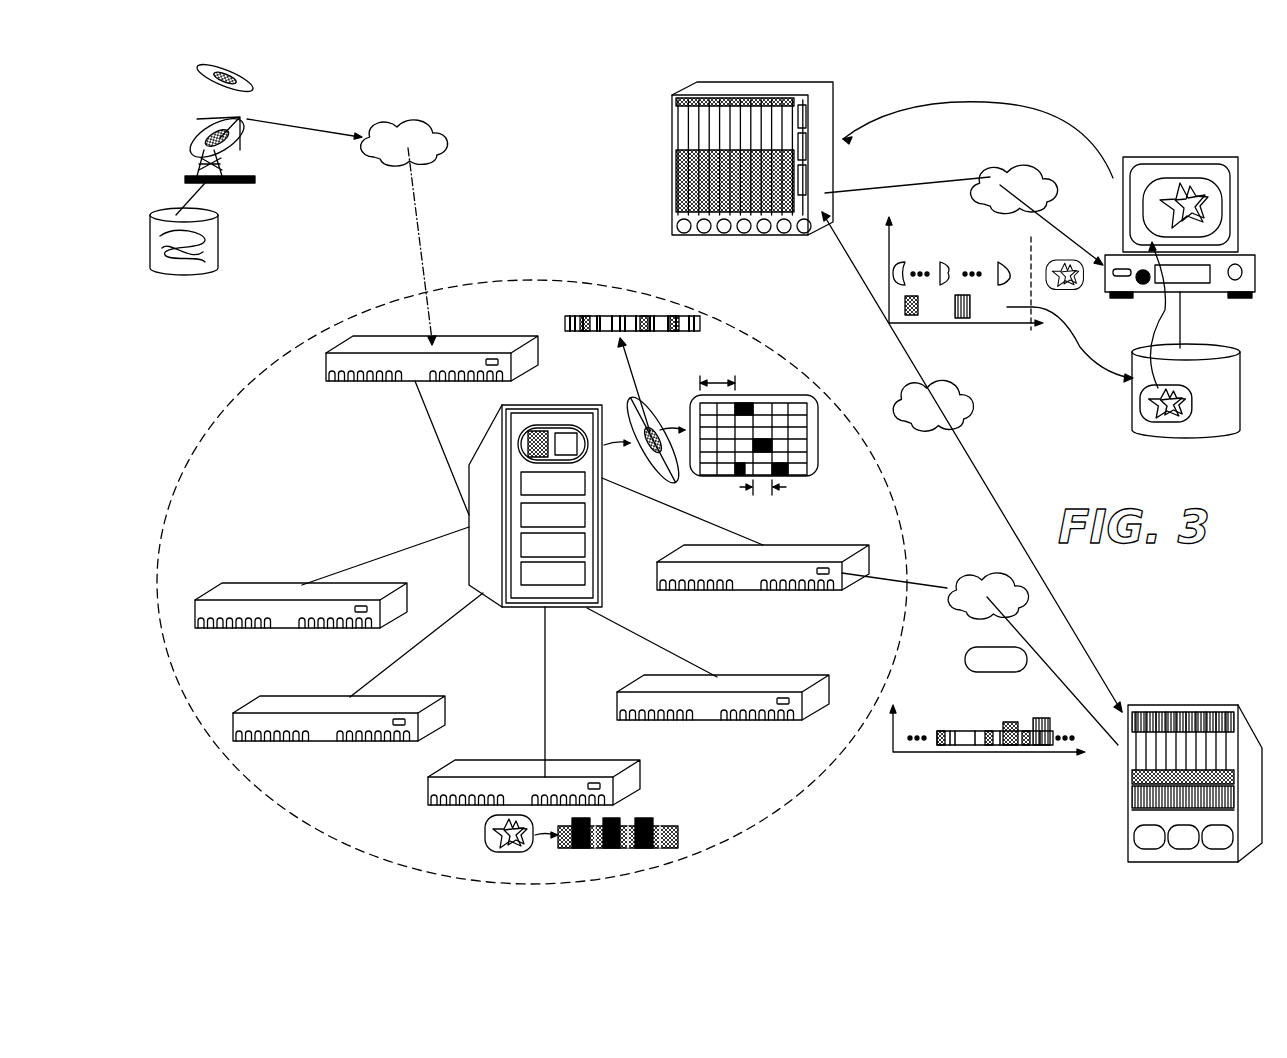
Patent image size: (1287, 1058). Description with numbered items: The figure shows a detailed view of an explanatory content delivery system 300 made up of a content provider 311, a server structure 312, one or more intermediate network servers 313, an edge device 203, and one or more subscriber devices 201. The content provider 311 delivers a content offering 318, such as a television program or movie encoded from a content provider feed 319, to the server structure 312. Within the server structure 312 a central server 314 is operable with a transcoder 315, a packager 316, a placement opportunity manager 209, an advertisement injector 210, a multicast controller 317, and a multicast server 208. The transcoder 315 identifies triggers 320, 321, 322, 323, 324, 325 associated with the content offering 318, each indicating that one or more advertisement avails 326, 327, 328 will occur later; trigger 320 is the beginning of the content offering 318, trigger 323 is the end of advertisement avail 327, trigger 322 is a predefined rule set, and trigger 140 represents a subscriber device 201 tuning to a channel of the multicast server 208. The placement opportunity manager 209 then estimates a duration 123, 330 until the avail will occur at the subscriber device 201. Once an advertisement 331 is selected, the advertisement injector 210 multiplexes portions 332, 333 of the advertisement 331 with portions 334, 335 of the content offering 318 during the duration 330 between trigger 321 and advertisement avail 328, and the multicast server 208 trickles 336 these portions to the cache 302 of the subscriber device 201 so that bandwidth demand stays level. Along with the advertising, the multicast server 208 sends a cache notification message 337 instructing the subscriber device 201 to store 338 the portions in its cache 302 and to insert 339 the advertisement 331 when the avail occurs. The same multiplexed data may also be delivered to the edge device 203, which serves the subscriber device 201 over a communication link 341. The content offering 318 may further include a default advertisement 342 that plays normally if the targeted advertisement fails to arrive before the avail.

The content delivery system 300 is at (220, 366).
The server structure 312 is at (262, 788).
The content offering 318 is at (232, 70).
The content provider 311 is at (254, 182).
The content provider feed 319 is at (303, 120).
The transcoder 315 is at (482, 345).
The packager 316 is at (273, 590).
The placement opportunity manager 209 is at (318, 705).
The advertisement injector 210 is at (527, 770).
The multicast controller 317 is at (770, 688).
The multicast server 208 is at (756, 583).
The central server 314 is at (606, 522).
The duration 123 is at (722, 378).
The trigger 320 is at (712, 378).
The trigger 321 is at (762, 478).
The trigger 322 is at (697, 404).
The trigger 324 is at (735, 463).
The advertisement avail 326 is at (744, 410).
The default advertisement 342 is at (780, 408).
The trigger 325 is at (736, 425).
The advertisement avail 327 is at (773, 443).
The trigger 323 is at (790, 463).
The advertisement avail 328 is at (784, 470).
The duration 330 is at (776, 488).
The edge device 203 is at (758, 228).
The trigger 140 is at (1068, 122).
The communication link 341 is at (898, 187).
The subscriber device 201 is at (1112, 250).
The insert 339 is at (1146, 318).
The cache 302 is at (1132, 398).
The store 338 is at (1083, 352).
The advertisement 331 is at (485, 822).
The portion of advertisement 332 is at (897, 262).
The portion of advertisement 333 is at (940, 262).
The trickle 336 is at (947, 329).
The cache notification message 337 is at (985, 655).
The portion of content offering 335 is at (1030, 742).
The portion of content offering 334 is at (958, 730).
The intermediate network server 313 is at (1185, 705).